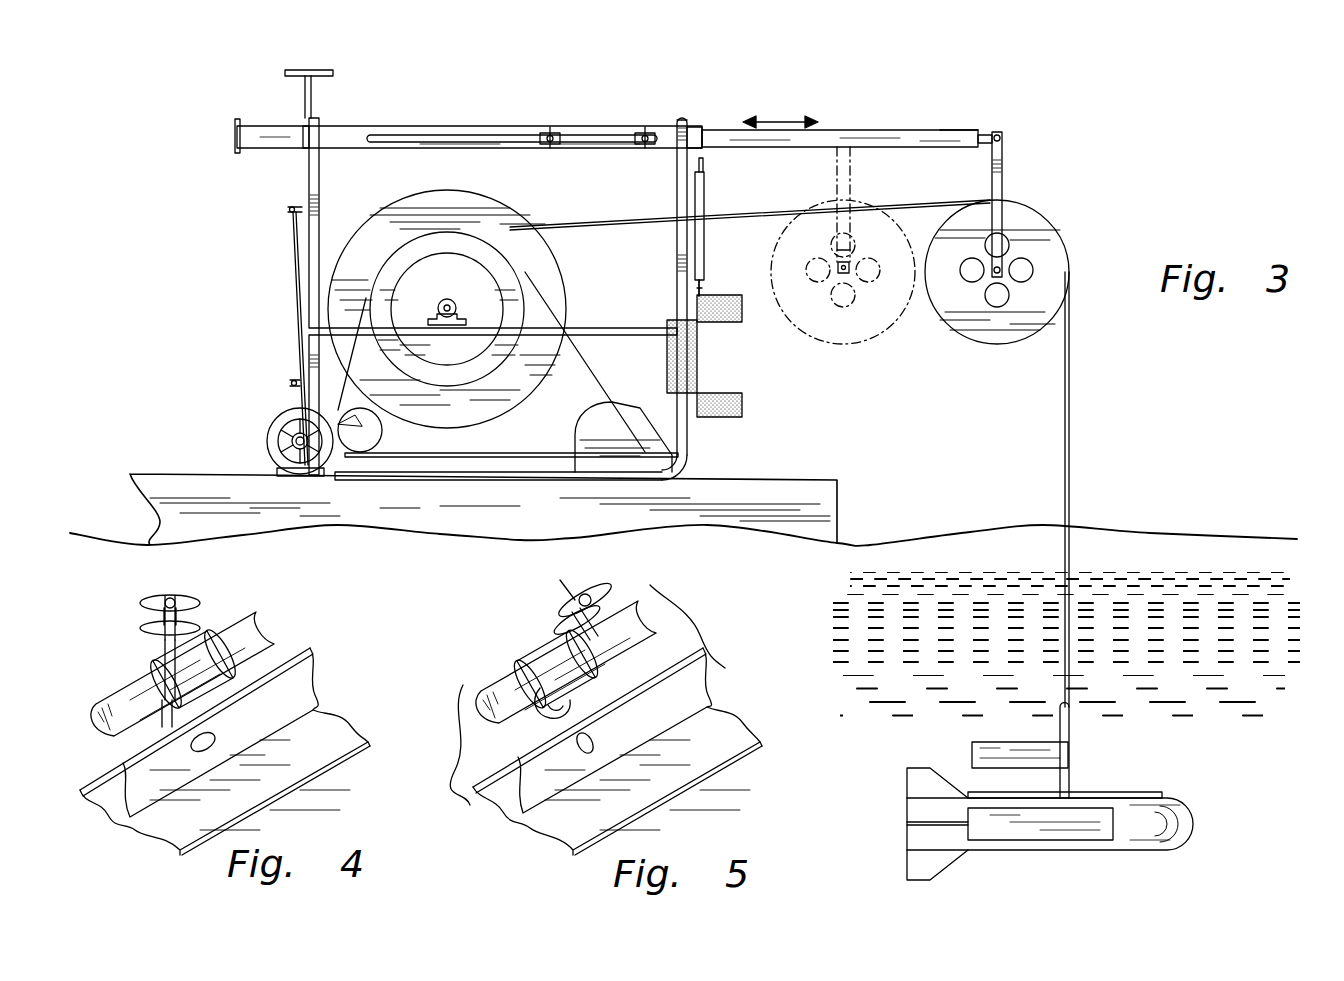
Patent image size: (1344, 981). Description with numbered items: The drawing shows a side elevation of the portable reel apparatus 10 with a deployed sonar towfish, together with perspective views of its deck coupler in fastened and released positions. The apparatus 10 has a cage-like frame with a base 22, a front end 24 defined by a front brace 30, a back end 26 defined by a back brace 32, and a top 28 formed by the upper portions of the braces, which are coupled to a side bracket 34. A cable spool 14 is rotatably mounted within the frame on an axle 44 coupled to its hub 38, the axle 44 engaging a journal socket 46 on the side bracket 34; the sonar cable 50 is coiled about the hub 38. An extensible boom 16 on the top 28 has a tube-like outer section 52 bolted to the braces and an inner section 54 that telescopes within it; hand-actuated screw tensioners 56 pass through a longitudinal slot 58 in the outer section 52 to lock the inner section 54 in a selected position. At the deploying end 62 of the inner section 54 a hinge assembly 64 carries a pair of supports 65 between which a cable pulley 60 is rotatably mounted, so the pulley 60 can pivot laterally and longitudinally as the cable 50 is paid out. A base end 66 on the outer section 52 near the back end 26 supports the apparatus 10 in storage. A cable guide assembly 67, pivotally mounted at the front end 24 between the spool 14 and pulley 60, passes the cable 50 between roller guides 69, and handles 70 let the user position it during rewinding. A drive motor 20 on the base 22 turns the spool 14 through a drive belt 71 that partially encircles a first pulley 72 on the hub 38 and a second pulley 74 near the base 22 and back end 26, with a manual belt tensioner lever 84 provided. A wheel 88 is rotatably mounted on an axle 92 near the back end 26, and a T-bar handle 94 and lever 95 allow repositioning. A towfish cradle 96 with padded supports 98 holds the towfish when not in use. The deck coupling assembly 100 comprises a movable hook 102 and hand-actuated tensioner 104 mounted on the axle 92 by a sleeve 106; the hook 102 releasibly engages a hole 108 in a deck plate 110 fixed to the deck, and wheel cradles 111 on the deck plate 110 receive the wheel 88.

In FIG. 3, the portable reel apparatus 10 is at (803, 95).
In FIG. 3, the cable spool 14 is at (470, 207).
In FIG. 3, the extensible/retractable boom 16 is at (695, 130).
In FIG. 3, the drive motor 20 is at (590, 428).
In FIG. 3, the base 22 is at (450, 480).
In FIG. 3, the front end 24 is at (688, 440).
In FIG. 3, the back end 26 is at (312, 364).
In FIG. 3, the top 28 is at (683, 118).
In FIG. 3, the front brace 30 is at (677, 184).
In FIG. 3, the back brace 32 is at (319, 190).
In FIG. 3, the side bracket 34 is at (615, 327).
In FIG. 3, the hub 38 is at (446, 340).
In FIG. 3, the axle 44 is at (438, 301).
In FIG. 3, the journal socket 46 is at (452, 300).
In FIG. 3, the sonar cable 50 is at (1070, 390).
In FIG. 3, the outer section 52 is at (348, 126).
In FIG. 3, the inner section 54 is at (885, 130).
In FIG. 3, the screw tensioners 56 is at (553, 133).
In FIG. 3, the longitudinal slot 58 is at (441, 134).
In FIG. 3, the cable pulley 60 is at (1055, 228).
In FIG. 3, the deploying end 62 is at (958, 135).
In FIG. 3, the hinge assembly 64 is at (1001, 136).
In FIG. 3, the supports 65 is at (1000, 235).
In FIG. 3, the base end 66 is at (235, 137).
In FIG. 3, the cable guide assembly 67 is at (702, 290).
In FIG. 3, the roller guides 69 is at (704, 248).
In FIG. 3, the handles 70 is at (704, 167).
In FIG. 3, the drive belt 71 is at (510, 458).
In FIG. 3, the first pulley 72 is at (518, 266).
In FIG. 3, the second pulley 74 is at (360, 444).
In FIG. 3, the manual belt tensioner lever 84 is at (296, 240).
In FIG. 3, the wheel 88 is at (268, 437).
In FIG. 3, the axle 92 is at (1190, 818).
In FIG. 4, the axle 92 is at (270, 626).
In FIG. 5, the axle 92 is at (490, 690).
In FIG. 3, the handle (T-bar) 94 is at (333, 72).
In FIG. 3, the lever 95 is at (303, 150).
In FIG. 3, the towfish cradle 96 is at (690, 378).
In FIG. 3, the padded supports 98 is at (730, 312).
In FIG. 4, the deck coupling assembly 100 is at (112, 672).
In FIG. 5, the deck coupling assembly 100 is at (525, 582).
In FIG. 5, the movable hook 102 is at (532, 658).
In FIG. 4, the hand-actuated tensioner 104 is at (218, 600).
In FIG. 5, the hand-actuated tensioner 104 is at (605, 588).
In FIG. 4, the sleeve 106 is at (150, 642).
In FIG. 5, the sleeve 106 is at (535, 634).
In FIG. 4, the hole 108 is at (192, 750).
In FIG. 5, the hole 108 is at (594, 740).
In FIG. 4, the deck plate 110 is at (305, 745).
In FIG. 5, the deck plate 110 is at (698, 755).
In FIG. 3, the wheel cradles 111 is at (280, 474).